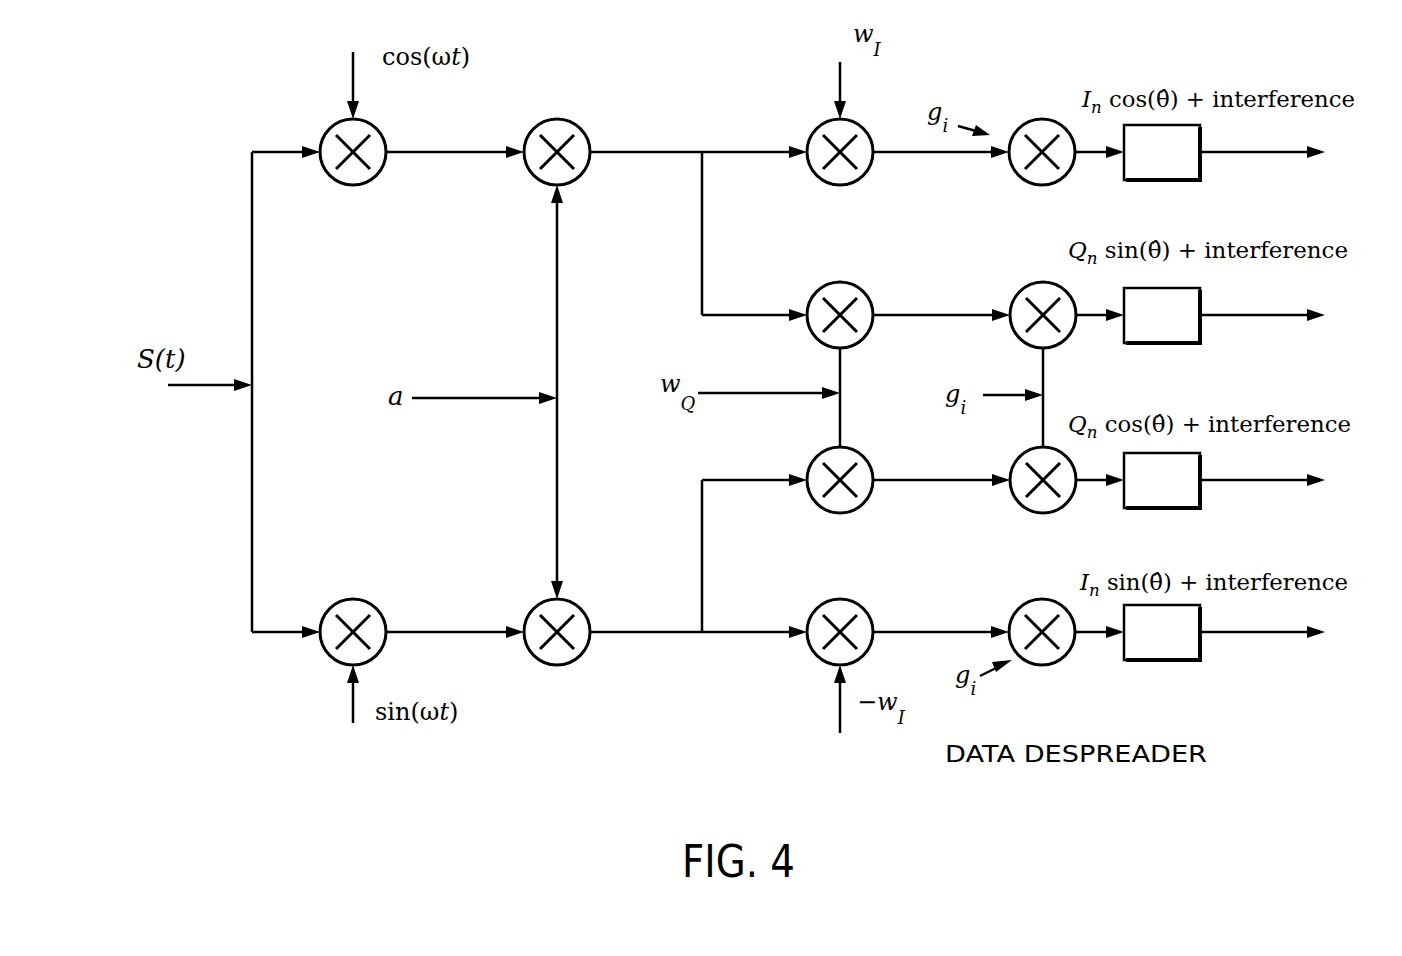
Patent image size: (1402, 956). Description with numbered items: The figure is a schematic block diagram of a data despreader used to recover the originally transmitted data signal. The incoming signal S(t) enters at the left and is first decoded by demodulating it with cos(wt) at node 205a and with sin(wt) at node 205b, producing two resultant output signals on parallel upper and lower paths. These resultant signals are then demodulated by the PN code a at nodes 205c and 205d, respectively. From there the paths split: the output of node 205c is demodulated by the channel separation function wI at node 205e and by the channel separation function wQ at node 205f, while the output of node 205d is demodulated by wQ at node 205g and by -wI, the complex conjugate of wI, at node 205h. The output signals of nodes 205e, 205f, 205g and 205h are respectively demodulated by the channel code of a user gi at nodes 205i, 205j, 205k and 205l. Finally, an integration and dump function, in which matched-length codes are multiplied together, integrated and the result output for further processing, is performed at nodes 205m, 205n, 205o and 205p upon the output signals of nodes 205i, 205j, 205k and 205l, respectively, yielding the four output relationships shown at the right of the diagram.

The node 205a is at (359, 183).
The node 205b is at (372, 601).
The node 205c is at (574, 123).
The node 205d is at (576, 604).
The node 205e is at (817, 127).
The node 205f is at (820, 281).
The node 205g is at (814, 451).
The node 205h is at (818, 611).
The node 205i is at (1027, 125).
The node 205j is at (1027, 282).
The node 205k is at (1032, 515).
The node 205l is at (1031, 668).
The integration and dump node 205m is at (1203, 178).
The integration and dump node 205n is at (1203, 341).
The integration and dump node 205o is at (1203, 506).
The integration and dump node 205p is at (1203, 658).